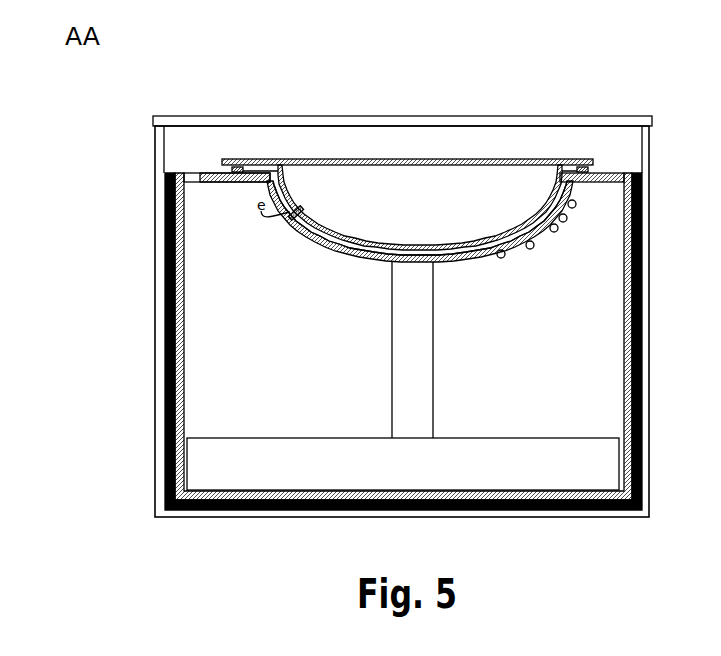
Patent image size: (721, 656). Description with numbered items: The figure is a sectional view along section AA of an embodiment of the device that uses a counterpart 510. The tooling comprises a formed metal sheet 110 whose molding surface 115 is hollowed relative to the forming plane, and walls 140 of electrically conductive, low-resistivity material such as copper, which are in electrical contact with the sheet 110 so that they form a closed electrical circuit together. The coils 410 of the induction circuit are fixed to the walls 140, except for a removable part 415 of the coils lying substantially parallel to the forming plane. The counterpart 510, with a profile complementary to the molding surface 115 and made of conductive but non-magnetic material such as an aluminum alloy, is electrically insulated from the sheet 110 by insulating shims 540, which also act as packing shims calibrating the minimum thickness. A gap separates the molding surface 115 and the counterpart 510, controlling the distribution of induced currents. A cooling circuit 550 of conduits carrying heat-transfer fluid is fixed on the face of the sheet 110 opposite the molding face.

The removable part 415 is at (221, 115).
The counterpart 510 is at (285, 168).
The insulating shims 540 is at (200, 173).
The coils 410 is at (155, 245).
The formed metal sheet 110 is at (303, 240).
The molding surface 115 is at (357, 237).
The cooling circuit 550 is at (501, 258).
The walls 140 is at (622, 318).